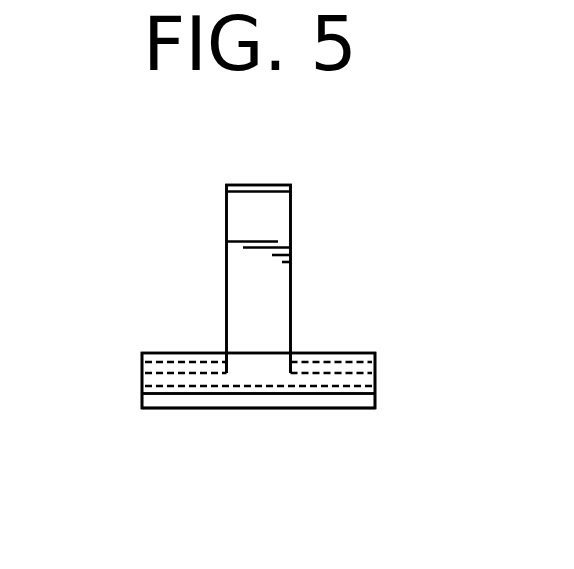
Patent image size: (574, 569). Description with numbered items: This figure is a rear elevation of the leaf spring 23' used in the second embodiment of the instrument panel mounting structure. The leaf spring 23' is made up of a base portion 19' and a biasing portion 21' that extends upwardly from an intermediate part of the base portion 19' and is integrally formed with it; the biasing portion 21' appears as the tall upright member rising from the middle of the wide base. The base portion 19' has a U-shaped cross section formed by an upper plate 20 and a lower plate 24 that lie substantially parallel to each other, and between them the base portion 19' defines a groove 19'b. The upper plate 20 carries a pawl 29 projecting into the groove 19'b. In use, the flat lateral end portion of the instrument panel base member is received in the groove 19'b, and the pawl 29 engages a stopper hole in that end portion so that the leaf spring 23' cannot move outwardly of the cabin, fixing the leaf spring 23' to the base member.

The leaf spring 23' is at (233, 273).
The biasing portion 21' is at (312, 274).
The upper plate 20 is at (318, 354).
The pawl 29 is at (140, 366).
The base portion 19' is at (259, 405).
The groove 19'b is at (258, 428).
The lower plate 24 is at (288, 397).